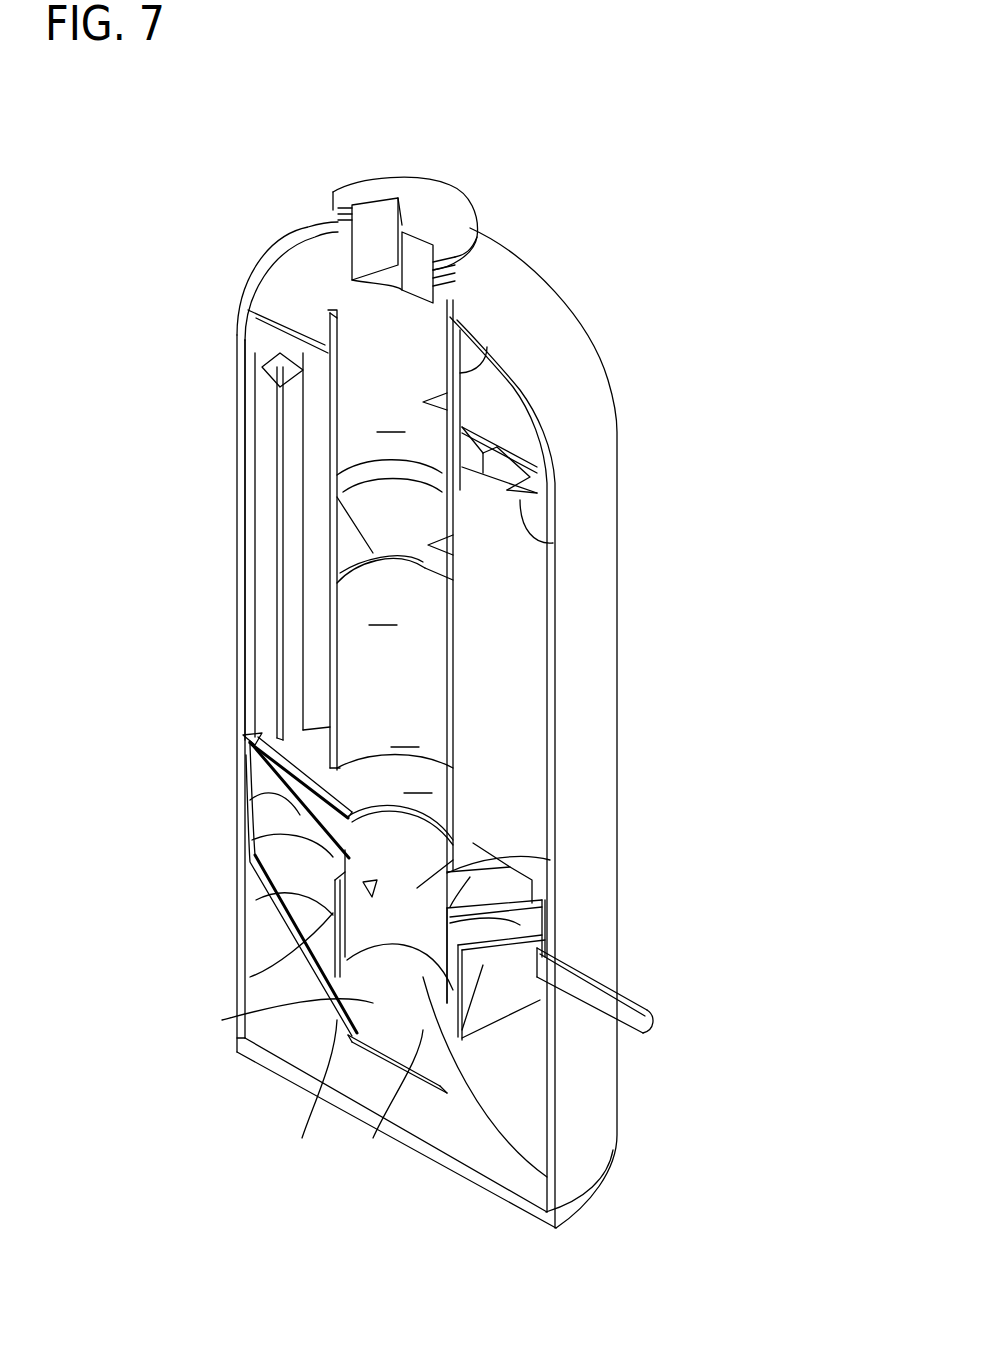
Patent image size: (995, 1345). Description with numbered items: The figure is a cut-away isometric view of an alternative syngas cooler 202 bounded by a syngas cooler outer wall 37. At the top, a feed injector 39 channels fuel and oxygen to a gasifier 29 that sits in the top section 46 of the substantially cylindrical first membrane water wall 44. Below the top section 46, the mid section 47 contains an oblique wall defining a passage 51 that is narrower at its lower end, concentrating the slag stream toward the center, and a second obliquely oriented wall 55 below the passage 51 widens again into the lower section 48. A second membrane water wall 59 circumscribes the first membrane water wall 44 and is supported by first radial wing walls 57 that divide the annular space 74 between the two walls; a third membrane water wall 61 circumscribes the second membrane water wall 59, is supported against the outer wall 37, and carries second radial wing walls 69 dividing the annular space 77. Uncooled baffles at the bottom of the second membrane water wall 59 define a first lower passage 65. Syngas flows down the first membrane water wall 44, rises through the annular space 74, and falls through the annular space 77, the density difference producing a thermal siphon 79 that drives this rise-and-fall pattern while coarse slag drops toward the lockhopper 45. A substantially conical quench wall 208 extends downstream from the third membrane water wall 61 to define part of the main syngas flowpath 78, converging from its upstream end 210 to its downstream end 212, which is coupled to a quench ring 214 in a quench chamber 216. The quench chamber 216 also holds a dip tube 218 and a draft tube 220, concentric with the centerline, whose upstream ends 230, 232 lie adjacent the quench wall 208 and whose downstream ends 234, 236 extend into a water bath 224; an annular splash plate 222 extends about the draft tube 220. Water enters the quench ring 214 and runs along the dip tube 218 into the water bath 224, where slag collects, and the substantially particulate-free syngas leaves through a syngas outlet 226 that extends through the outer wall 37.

The syngas cooler 202 is at (607, 242).
The feed injector 39 is at (402, 222).
The syngas cooler outer wall 37 is at (588, 692).
The gasifier 29 is at (253, 353).
The first radial wing walls 57 is at (312, 403).
The second membrane water wall 59 is at (282, 427).
The first membrane water wall 44 is at (330, 455).
The third membrane water wall 61 is at (253, 478).
The thermal siphon 79 is at (315, 540).
The annular space 77 is at (270, 593).
The annular space 74 is at (297, 623).
The top section 46 is at (394, 651).
The mid section 47 is at (395, 562).
The lower section 48 is at (395, 742).
The first lower passage 65 is at (400, 803).
The second radial wing walls 69 is at (553, 547).
The passage 51 is at (410, 577).
The second obliquely oriented wall 55 is at (430, 628).
The upstream end 210 is at (250, 743).
The quench wall 208 is at (273, 763).
The splash plate 222 is at (260, 800).
The downstream end 212 is at (287, 833).
The quench ring 214 is at (333, 857).
The main syngas flowpath 78 is at (300, 900).
The dip tube 218 is at (280, 973).
The draft tube 220 is at (280, 1020).
The water bath 224 is at (323, 1078).
The lockhopper 45 is at (367, 1100).
The downstream end 234 is at (403, 1050).
The downstream end 236 is at (573, 1180).
The upstream end 232 is at (513, 987).
The quench chamber 216 is at (453, 860).
The upstream end 230 is at (447, 873).
The syngas outlet 226 is at (645, 1025).